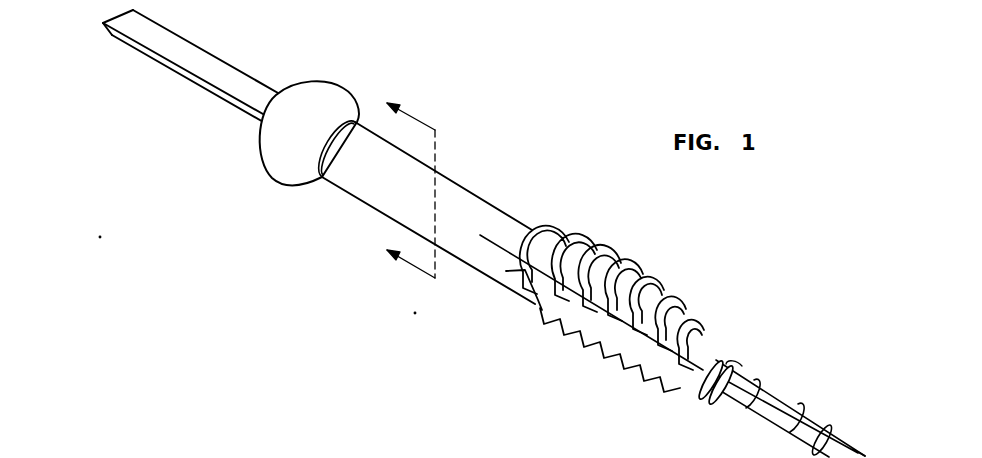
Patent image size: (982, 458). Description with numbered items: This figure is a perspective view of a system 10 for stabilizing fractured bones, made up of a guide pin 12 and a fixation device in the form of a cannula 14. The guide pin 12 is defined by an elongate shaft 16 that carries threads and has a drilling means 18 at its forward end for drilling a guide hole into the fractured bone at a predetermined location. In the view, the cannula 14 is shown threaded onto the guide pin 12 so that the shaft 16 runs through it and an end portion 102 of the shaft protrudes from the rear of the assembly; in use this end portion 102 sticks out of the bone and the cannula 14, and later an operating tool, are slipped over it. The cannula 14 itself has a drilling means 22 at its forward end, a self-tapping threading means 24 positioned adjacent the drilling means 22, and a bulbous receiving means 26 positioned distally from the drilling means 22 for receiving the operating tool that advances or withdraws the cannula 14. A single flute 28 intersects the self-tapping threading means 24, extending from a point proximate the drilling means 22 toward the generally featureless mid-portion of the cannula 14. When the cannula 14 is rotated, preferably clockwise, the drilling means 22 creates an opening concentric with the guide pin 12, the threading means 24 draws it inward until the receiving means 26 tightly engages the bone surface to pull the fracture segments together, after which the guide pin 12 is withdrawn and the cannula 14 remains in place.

The system for stabilizing fractured bones 10 is at (603, 77).
The guide pin 12 is at (224, 53).
The cannula 14 is at (463, 178).
The elongate shaft 16 is at (238, 110).
The drilling means 18 is at (872, 457).
The drilling means 22 is at (707, 377).
The self-tapping threading means 24 is at (627, 265).
The receiving means 26 is at (340, 92).
The flute 28 is at (568, 332).
The end portion 102 is at (135, 10).